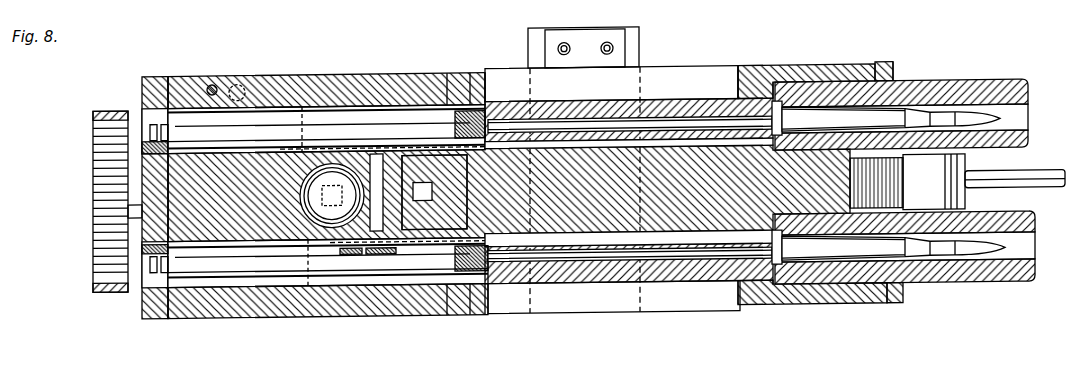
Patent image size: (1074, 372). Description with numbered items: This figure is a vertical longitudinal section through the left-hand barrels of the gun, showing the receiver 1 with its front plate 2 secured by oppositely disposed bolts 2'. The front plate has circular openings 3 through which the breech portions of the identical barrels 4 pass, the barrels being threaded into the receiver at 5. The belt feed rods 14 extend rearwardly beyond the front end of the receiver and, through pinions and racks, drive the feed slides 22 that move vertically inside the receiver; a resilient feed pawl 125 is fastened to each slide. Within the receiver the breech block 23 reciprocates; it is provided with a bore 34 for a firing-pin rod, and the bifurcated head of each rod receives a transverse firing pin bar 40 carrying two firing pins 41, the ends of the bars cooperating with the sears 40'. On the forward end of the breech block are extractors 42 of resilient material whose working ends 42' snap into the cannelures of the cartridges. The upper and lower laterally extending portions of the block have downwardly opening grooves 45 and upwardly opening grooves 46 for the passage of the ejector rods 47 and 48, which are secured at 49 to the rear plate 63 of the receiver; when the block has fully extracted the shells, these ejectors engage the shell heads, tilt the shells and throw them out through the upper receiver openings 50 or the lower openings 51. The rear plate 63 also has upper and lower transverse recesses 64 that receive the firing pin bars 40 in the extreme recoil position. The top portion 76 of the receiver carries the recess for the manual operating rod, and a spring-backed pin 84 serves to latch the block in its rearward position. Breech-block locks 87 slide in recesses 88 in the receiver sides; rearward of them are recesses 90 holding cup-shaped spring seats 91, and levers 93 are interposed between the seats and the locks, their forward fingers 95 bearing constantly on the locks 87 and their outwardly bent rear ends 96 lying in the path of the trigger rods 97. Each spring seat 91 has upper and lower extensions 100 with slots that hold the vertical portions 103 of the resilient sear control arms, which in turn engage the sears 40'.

The receiver 1 is at (378, 305).
The front plate 2 is at (909, 61).
The bolts 2' is at (907, 182).
The circular openings 3 is at (885, 67).
The barrels 4 is at (996, 85).
The threaded connection 5 is at (833, 74).
The belt feed rods 14 is at (1025, 177).
The feed slides 22 is at (639, 46).
The breech bolt 23 is at (580, 104).
The bore 34 is at (354, 259).
The firing pin bar 40 is at (480, 191).
The sears 40' is at (440, 195).
The firing pins 41 is at (648, 118).
The extractors 42 is at (739, 185).
The working ends of the extractors 42' is at (776, 182).
The downwardly opening grooves 45 is at (613, 144).
The upwardly opening grooves 46 is at (563, 240).
The ejector rods 47 is at (250, 120).
The ejector rods 48 is at (242, 247).
The securing point of ejector rods 49 is at (170, 142).
The upper receiver openings 50 is at (683, 70).
The lower openings 51 is at (660, 303).
The rear plate 63 is at (146, 316).
The transverse recesses 64 is at (148, 120).
The top portion of the receiver 76 is at (356, 73).
The spring-backed pin 84 is at (214, 82).
The breech-block locks 87 is at (444, 246).
The recesses 88 is at (404, 153).
The recesses 90 is at (307, 224).
The cup-shaped spring seat 91 is at (340, 163).
The levers 93 is at (381, 259).
The fingers 95 is at (432, 196).
The rear ends of levers 96 is at (326, 132).
The trigger rods 97 is at (135, 198).
The extensions of spring seat 100 is at (332, 195).
The vertical portions of sear control arms 103 is at (302, 104).
The feed pawl 125 is at (591, 29).